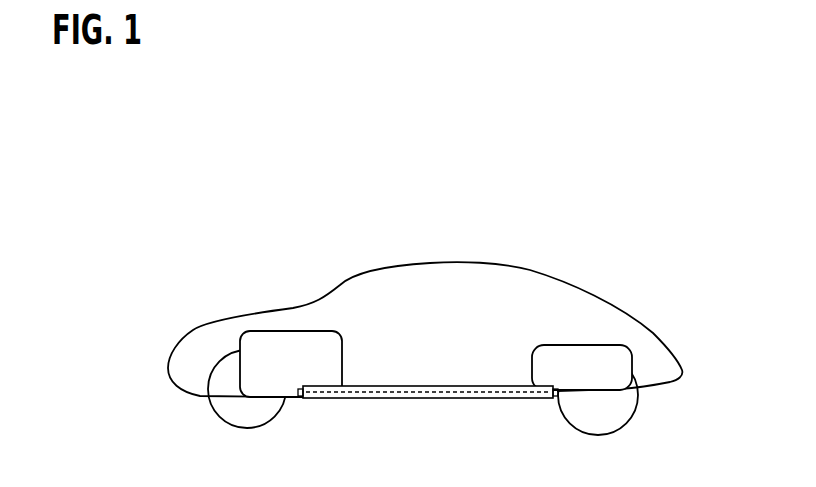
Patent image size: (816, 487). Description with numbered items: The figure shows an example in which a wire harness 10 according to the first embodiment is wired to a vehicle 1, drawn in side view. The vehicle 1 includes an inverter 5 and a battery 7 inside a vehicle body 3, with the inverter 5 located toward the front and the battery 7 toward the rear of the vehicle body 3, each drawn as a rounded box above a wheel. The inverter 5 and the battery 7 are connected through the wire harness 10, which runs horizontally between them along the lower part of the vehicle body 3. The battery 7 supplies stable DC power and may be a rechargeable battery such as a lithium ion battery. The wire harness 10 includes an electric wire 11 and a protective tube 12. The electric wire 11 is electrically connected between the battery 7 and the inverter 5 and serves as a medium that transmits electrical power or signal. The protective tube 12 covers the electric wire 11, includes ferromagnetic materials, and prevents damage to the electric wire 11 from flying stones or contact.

The vehicle 1 is at (425, 318).
The vehicle body 3 is at (597, 292).
The inverter 5 is at (341, 337).
The battery 7 is at (545, 344).
The wire harness 10 is at (428, 393).
The electric wire 11 is at (368, 399).
The protective tube 12 is at (438, 399).